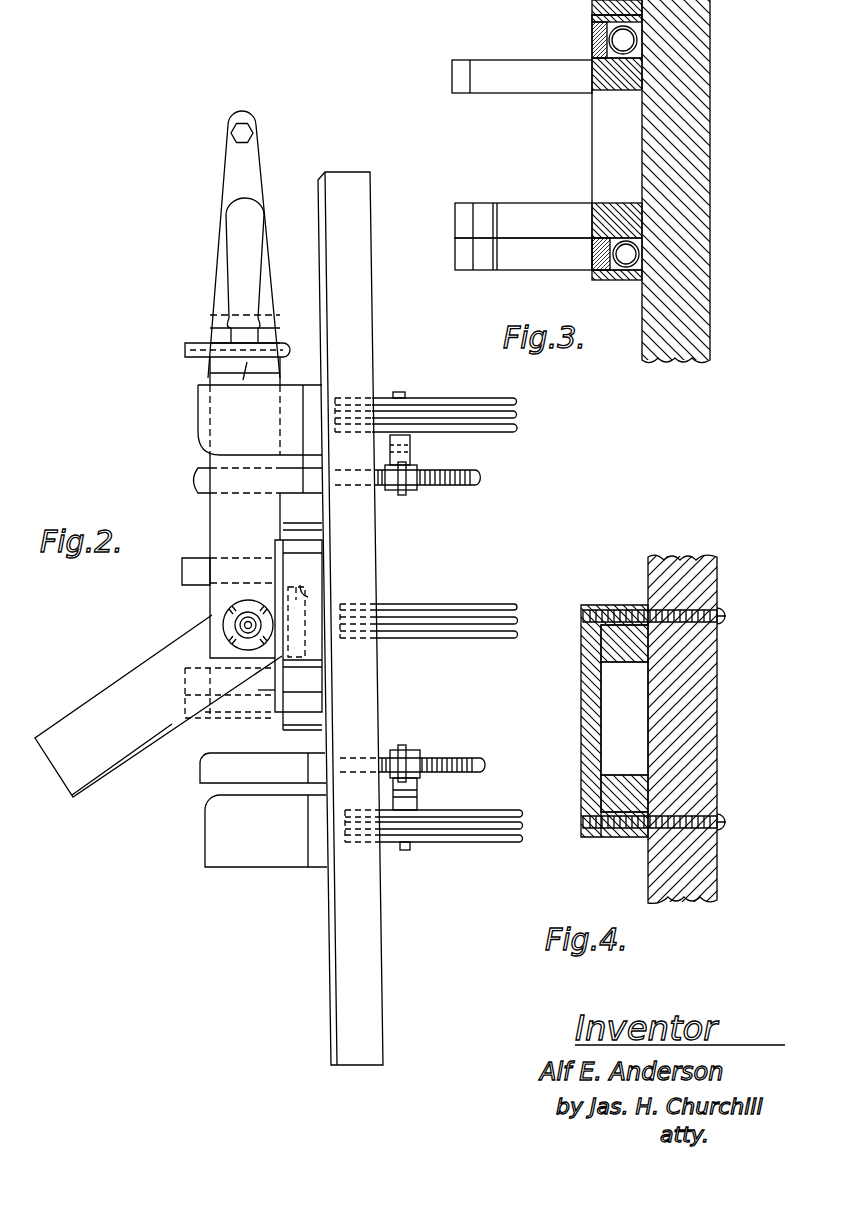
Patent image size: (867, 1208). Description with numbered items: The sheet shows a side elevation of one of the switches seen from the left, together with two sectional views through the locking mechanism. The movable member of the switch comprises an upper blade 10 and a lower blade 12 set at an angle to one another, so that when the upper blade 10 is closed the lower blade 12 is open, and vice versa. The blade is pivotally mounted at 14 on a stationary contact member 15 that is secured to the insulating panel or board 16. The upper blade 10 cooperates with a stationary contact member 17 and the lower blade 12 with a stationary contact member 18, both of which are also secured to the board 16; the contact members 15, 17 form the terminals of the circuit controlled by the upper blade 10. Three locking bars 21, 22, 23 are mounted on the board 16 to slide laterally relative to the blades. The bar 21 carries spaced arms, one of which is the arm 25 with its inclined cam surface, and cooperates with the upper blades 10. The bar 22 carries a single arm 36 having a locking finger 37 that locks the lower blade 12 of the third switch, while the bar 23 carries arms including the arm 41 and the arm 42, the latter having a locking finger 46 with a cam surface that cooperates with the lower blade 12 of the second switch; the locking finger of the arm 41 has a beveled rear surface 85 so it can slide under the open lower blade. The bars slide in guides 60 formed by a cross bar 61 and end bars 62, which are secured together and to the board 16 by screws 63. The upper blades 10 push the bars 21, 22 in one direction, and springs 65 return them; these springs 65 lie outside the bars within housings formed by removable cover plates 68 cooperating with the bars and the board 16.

In FIG. 2, the upper blade 10 is at (210, 508).
In FIG. 2, the lower blade 12 is at (125, 672).
In FIG. 2, the pivot 14 is at (240, 618).
In FIG. 2, the stationary contact member 15 is at (301, 609).
In FIG. 2, the panel or board 16 is at (366, 326).
In FIG. 3, the panel or board 16 is at (642, 354).
In FIG. 4, the panel or board 16 is at (718, 713).
In FIG. 2, the stationary contact member 17 is at (198, 422).
In FIG. 2, the stationary contact member 18 is at (205, 838).
In FIG. 3, the bar 21 is at (602, 80).
In FIG. 3, the bar 22 is at (612, 215).
In FIG. 3, the bar 23 is at (602, 266).
In FIG. 2, the arm 25 is at (195, 560).
In FIG. 3, the arm 25 is at (508, 80).
In FIG. 2, the arm 36 is at (259, 690).
In FIG. 3, the arm 36 is at (555, 206).
In FIG. 2, the locking finger 37 is at (196, 668).
In FIG. 3, the locking finger 37 is at (480, 208).
In FIG. 2, the arm 41 is at (270, 714).
In FIG. 3, the arm 42 is at (535, 268).
In FIG. 3, the locking finger 46 is at (478, 270).
In FIG. 4, the guides 60 is at (624, 718).
In FIG. 4, the cross bar 61 is at (581, 684).
In FIG. 4, the end bars 62 is at (625, 625).
In FIG. 4, the screws 63 is at (604, 608).
In FIG. 3, the springs 65 is at (592, 44).
In FIG. 3, the removable cover plates 68 is at (630, 281).
In FIG. 2, the beveled rear surface 85 is at (206, 718).